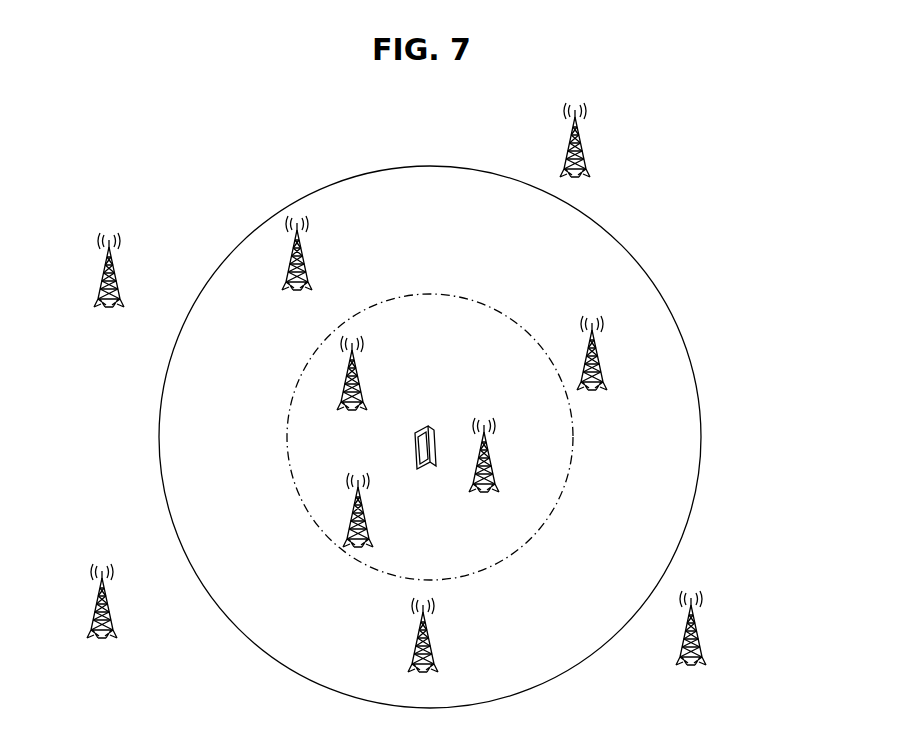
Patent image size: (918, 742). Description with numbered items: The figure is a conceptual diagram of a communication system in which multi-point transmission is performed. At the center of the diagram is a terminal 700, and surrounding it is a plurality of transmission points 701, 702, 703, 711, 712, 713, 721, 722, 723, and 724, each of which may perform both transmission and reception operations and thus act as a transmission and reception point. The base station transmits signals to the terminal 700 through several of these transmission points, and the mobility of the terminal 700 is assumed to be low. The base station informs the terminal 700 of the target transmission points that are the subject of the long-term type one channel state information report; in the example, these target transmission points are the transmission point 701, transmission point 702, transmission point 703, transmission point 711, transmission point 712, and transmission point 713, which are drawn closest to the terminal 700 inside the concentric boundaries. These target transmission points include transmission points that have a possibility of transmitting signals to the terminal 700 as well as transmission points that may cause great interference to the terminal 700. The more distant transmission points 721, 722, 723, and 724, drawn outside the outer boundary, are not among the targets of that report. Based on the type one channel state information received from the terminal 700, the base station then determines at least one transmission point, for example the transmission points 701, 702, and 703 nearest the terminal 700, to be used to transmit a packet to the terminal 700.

The terminal 700 is at (413, 446).
The transmission point 701 is at (362, 375).
The transmission point 702 is at (494, 458).
The transmission point 703 is at (368, 512).
The transmission point 711 is at (307, 256).
The transmission point 712 is at (602, 355).
The transmission point 713 is at (433, 640).
The transmission point 721 is at (119, 273).
The transmission point 722 is at (585, 142).
The transmission point 723 is at (701, 630).
The transmission point 724 is at (112, 603).